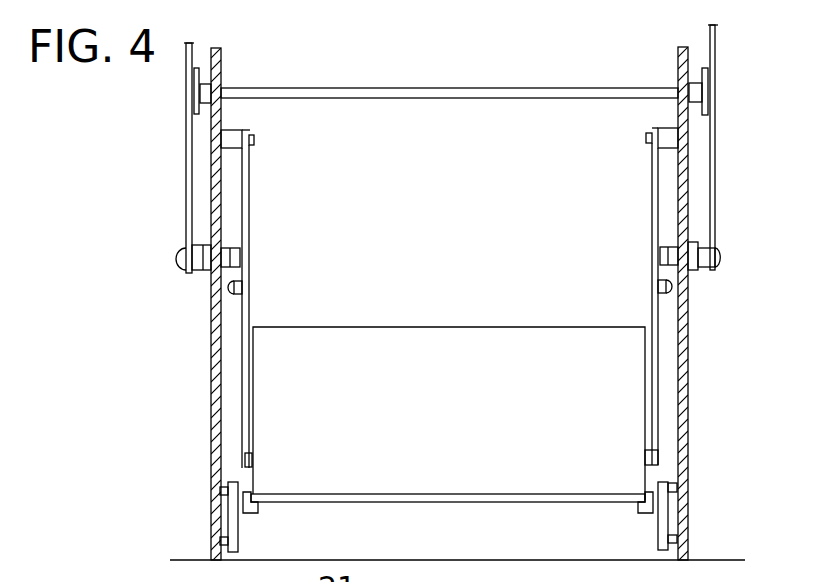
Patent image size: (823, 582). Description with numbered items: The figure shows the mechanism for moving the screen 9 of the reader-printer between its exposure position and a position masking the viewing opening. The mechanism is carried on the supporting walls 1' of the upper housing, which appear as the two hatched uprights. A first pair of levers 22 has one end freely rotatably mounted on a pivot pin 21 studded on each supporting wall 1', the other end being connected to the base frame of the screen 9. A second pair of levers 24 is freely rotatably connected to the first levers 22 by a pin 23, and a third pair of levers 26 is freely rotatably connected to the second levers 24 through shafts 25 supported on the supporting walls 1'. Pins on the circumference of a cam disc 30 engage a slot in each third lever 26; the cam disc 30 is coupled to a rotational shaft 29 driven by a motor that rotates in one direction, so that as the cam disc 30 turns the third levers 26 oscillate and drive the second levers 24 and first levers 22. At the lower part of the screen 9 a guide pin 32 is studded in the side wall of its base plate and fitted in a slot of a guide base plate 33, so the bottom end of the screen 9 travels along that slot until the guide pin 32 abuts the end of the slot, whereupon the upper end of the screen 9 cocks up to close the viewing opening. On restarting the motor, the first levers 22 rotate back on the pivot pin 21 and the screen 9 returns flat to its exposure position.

The supporting wall 1' is at (449, 295).
The screen 9 is at (502, 482).
The pivot pin 21 is at (254, 140).
The first pair of levers 22 is at (250, 192).
The pin 23 is at (246, 287).
The second pair of levers 24 is at (241, 257).
The shaft 25 is at (197, 262).
The third pair of levers 26 is at (186, 182).
The rotational shaft 29 is at (600, 87).
The cam disc 30 is at (708, 105).
The guide pin 32 is at (250, 494).
The guide base plate 33 is at (238, 535).